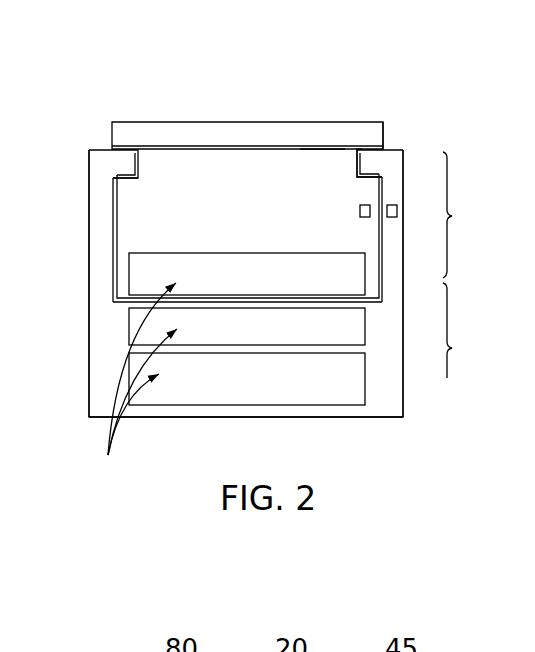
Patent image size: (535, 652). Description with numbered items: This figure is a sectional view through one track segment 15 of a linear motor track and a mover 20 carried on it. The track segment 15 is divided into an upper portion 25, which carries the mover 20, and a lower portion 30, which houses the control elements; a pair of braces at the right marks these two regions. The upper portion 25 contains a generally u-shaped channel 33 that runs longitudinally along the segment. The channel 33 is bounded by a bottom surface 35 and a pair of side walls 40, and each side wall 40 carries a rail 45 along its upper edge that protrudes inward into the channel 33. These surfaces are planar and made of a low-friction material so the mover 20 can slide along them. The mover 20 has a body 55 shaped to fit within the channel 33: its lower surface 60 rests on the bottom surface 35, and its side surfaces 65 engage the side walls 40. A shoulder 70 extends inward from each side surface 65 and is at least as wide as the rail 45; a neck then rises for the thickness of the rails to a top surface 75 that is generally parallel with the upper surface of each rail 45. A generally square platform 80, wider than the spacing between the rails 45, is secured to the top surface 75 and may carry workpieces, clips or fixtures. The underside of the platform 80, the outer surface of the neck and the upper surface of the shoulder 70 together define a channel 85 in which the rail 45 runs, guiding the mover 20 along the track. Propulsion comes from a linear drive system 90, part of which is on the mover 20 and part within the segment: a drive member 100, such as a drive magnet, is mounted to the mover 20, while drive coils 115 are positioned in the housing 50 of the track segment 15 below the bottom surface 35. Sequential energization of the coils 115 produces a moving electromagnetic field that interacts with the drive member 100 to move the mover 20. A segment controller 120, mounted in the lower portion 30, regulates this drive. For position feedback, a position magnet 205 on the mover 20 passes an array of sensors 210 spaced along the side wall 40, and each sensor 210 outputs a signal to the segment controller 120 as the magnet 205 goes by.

The track segment 15 is at (88, 321).
The mover 20 is at (142, 120).
The upper portion 25 is at (452, 216).
The lower portion 30 is at (452, 348).
The channel 33 is at (110, 180).
The bottom surface 35 is at (119, 307).
The side wall 40 is at (110, 230).
The rail 45 is at (115, 162).
The housing 50 is at (105, 388).
The body 55 is at (240, 162).
The lower surface 60 is at (367, 303).
The side surfaces 65 is at (381, 258).
The shoulder 70 is at (367, 178).
The top surface 75 is at (316, 153).
The platform 80 is at (362, 135).
The channel 85 is at (358, 150).
The linear drive system 90 is at (135, 388).
The drive member 100 is at (197, 270).
The drive coils 115 is at (223, 341).
The segment controller 120 is at (223, 393).
The position magnet 205 is at (370, 204).
The sensor 210 is at (395, 204).